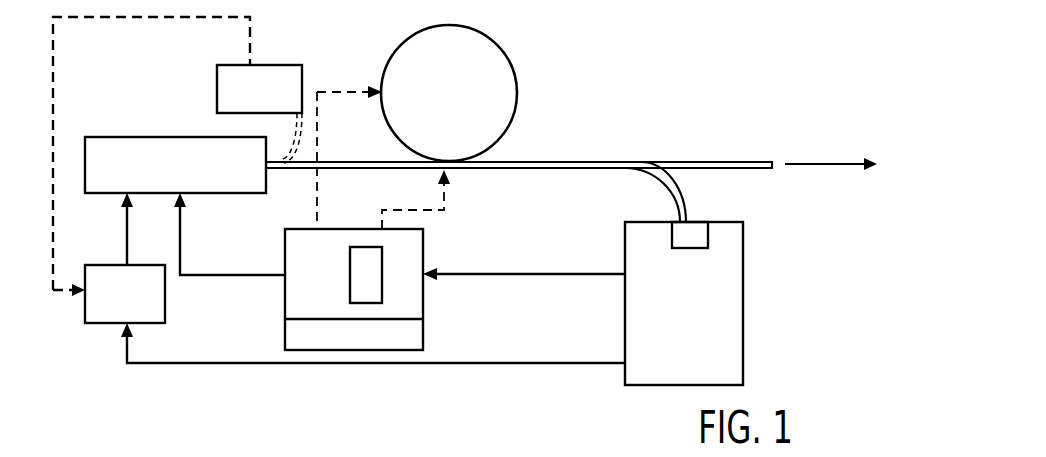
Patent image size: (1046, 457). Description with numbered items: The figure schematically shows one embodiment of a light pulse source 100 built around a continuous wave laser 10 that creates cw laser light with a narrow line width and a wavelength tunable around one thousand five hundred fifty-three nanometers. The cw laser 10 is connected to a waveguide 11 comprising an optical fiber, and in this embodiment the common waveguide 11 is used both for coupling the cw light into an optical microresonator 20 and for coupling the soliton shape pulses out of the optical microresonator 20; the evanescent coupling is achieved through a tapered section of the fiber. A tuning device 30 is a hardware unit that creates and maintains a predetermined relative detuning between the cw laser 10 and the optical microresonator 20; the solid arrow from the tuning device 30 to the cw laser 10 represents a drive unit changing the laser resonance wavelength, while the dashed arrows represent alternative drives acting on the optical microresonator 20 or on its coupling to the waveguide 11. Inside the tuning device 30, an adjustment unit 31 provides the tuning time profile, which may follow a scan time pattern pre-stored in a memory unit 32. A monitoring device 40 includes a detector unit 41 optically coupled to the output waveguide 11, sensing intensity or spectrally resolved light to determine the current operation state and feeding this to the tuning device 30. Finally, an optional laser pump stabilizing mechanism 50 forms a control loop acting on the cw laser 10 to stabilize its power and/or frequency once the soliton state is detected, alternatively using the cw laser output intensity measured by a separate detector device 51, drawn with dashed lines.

The light pulse source 100 is at (200, 113).
The continuous wave laser 10 is at (253, 183).
The waveguide 11 is at (318, 164).
The optical microresonator 20 is at (460, 145).
The tuning device 30 is at (322, 266).
The adjustment unit 31 is at (368, 290).
The memory unit 32 is at (348, 342).
The monitoring device 40 is at (660, 261).
The detector unit 41 is at (690, 232).
The laser pump stabilizing mechanism 50 is at (122, 302).
The detector device 51 is at (268, 80).